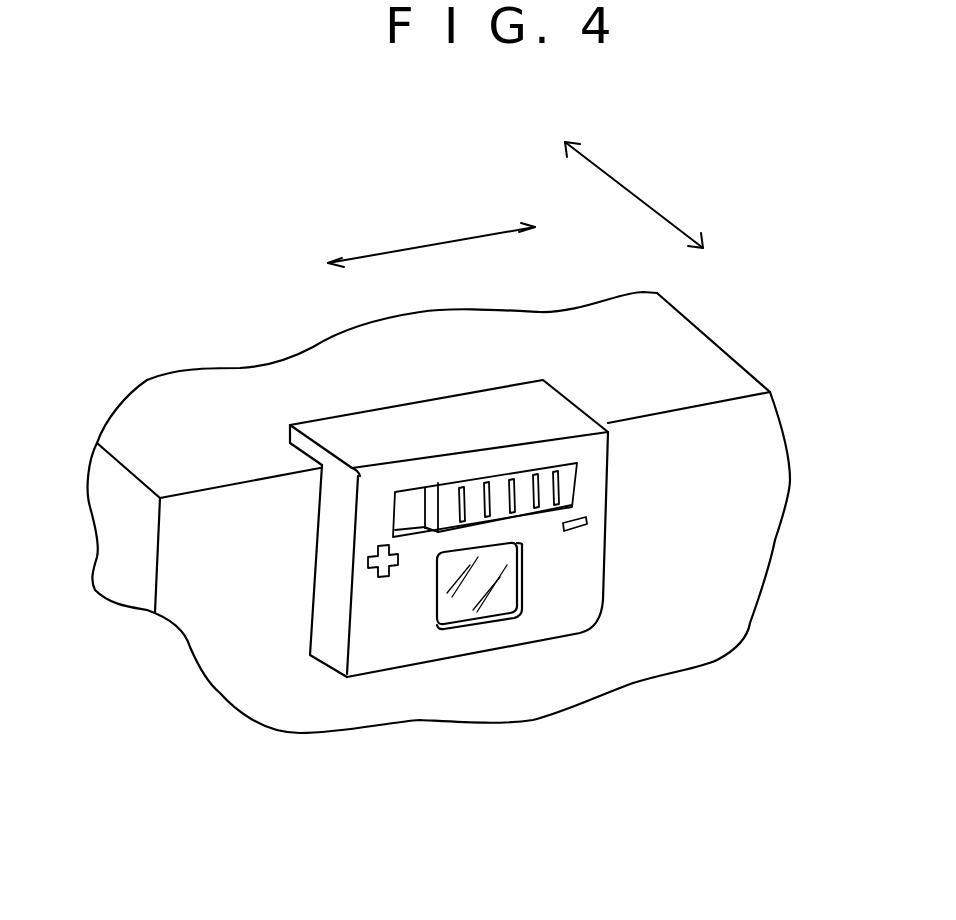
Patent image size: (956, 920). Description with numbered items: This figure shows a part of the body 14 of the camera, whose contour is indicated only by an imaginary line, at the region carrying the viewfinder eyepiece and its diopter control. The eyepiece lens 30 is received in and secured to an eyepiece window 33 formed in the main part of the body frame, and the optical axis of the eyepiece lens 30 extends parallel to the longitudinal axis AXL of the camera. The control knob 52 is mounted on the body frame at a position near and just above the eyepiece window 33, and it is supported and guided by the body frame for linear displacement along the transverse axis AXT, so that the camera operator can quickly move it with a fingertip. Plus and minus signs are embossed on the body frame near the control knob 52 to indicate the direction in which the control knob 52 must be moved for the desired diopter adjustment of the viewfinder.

The body 14 is at (723, 360).
The control knob 52 is at (567, 488).
The eyepiece lens 30 is at (502, 597).
The eyepiece window 33 is at (438, 602).
The transverse axis AXT is at (435, 245).
The longitudinal axis AXL is at (635, 192).